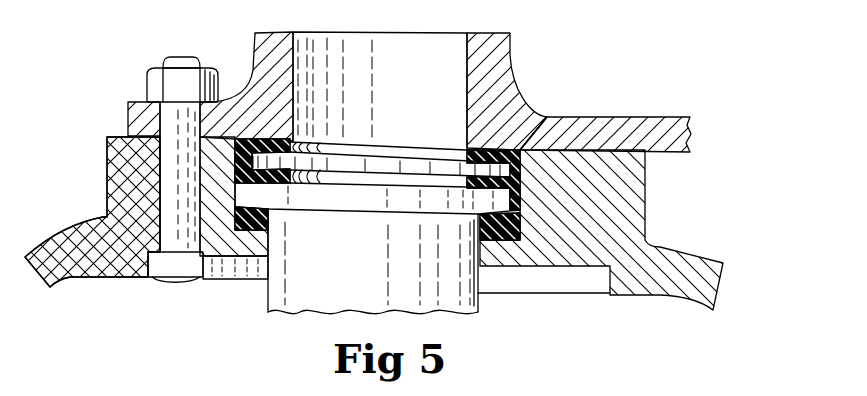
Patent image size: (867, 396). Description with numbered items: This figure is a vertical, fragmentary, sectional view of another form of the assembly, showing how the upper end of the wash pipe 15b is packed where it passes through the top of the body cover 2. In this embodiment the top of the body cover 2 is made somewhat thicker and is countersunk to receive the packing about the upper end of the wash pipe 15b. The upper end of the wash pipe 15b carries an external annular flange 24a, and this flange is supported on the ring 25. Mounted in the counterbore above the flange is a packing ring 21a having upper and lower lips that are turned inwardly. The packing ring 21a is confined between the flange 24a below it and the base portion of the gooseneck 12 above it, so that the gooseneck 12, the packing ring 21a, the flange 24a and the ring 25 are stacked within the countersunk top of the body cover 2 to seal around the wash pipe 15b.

The body cover 2 is at (47, 241).
The gooseneck 12 is at (507, 53).
The packing ring 21a is at (518, 147).
The external annular flange 24a is at (520, 201).
The ring 25 is at (252, 230).
The wash pipe 15b is at (478, 306).